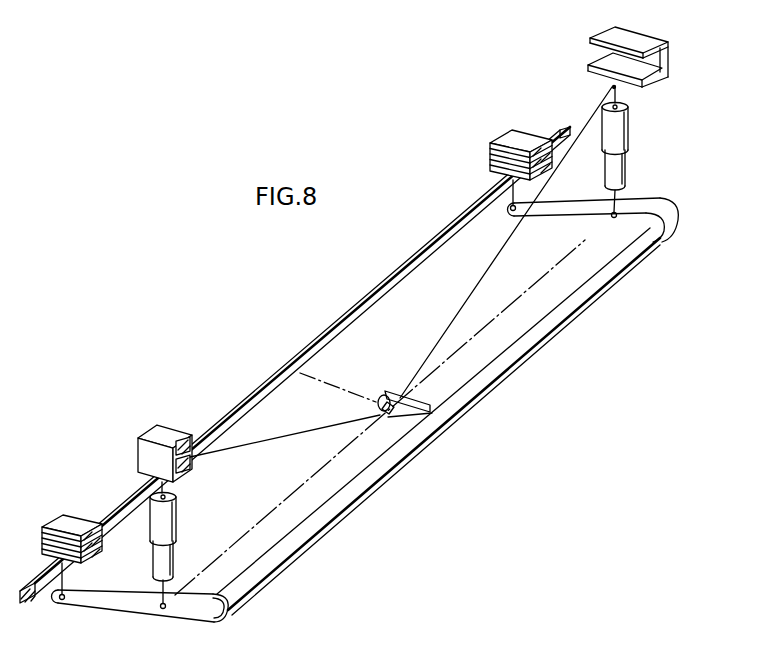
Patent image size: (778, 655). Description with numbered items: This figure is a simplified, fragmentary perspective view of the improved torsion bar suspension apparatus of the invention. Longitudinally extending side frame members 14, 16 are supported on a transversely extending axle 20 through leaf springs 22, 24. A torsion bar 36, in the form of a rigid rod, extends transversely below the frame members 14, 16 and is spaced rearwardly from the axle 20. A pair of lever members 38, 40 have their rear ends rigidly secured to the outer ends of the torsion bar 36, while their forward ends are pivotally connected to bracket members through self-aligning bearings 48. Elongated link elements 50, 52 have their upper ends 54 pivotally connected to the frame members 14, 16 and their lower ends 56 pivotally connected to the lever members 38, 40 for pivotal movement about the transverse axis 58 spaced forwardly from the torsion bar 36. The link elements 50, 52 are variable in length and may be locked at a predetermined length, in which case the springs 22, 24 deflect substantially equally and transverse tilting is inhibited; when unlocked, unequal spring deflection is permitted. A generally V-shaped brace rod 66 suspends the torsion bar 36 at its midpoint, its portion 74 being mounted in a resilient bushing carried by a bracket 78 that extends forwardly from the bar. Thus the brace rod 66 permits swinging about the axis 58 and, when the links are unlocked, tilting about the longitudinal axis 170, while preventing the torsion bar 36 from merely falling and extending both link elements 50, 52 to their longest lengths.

The side frame member 14 is at (641, 44).
The side frame member 16 is at (168, 432).
The axle 20 is at (372, 289).
The leaf spring 22 is at (520, 136).
The leaf spring 24 is at (67, 523).
The torsion bar 36 is at (589, 296).
The lever member 38 is at (560, 216).
The lever member 40 is at (115, 604).
The self-aligning bearing 48 is at (507, 213).
The link element 50 is at (632, 133).
The link element 52 is at (188, 524).
The upper end 54 is at (619, 92).
The lower end 56 is at (616, 213).
The axis 58 is at (298, 487).
The brace rod 66 is at (295, 434).
The portion of brace rod 74 is at (384, 395).
The bracket 78 is at (414, 407).
The axis 170 is at (489, 438).